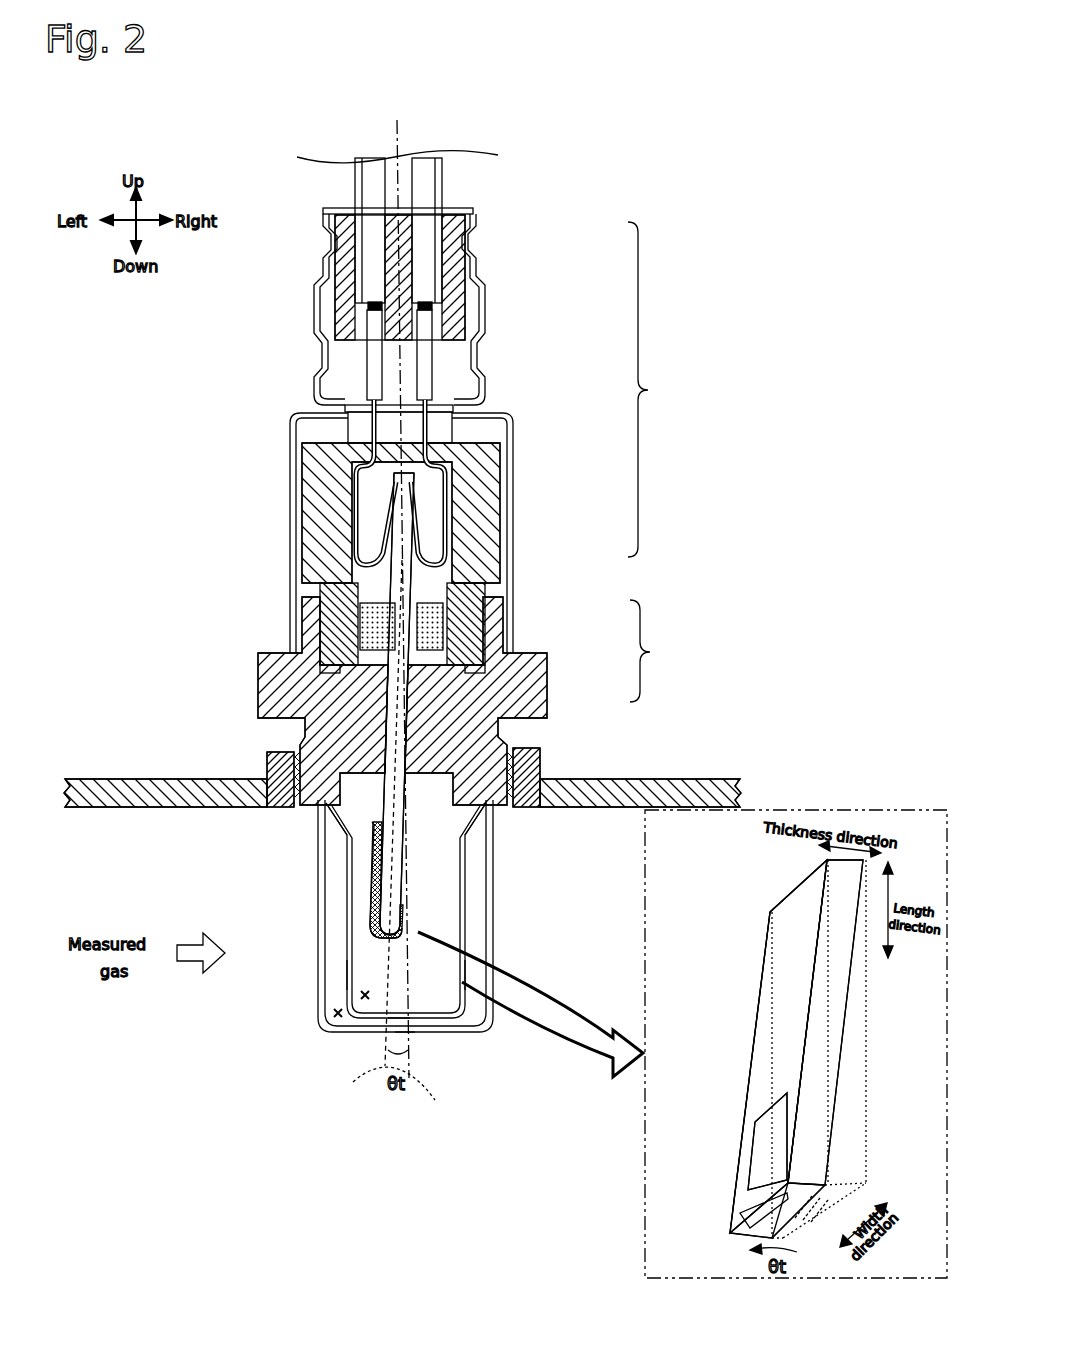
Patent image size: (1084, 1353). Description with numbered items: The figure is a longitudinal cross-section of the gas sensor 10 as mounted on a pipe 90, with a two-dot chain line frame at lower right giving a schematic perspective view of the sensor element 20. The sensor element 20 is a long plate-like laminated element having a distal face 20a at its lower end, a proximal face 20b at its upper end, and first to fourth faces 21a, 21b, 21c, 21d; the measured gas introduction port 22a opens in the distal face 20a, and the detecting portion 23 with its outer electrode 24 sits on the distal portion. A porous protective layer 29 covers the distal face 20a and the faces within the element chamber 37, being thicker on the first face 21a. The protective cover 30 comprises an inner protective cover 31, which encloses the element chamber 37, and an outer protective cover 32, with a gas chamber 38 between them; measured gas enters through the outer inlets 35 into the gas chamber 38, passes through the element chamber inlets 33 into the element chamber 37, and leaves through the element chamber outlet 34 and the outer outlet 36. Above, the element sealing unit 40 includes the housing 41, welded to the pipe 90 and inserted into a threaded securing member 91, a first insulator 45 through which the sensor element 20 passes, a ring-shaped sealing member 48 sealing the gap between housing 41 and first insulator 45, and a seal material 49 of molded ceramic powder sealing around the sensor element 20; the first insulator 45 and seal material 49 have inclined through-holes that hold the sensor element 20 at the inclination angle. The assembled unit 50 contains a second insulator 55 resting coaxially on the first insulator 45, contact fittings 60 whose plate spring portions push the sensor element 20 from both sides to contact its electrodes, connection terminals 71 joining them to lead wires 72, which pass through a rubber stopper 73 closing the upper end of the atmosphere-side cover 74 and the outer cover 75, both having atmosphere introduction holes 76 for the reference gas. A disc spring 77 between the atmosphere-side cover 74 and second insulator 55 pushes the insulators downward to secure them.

The gas sensor 10 is at (624, 136).
The sensor element 20 is at (382, 900).
The distal face 20a is at (388, 938).
The proximal face 20b is at (373, 450).
The first face 21a is at (372, 888).
The second face 21b is at (412, 893).
The third face 21c is at (748, 1070).
The fourth face 21d is at (813, 1118).
The measured gas introduction port 22a is at (762, 1210).
The detecting portion 23 is at (682, 1154).
The outer electrode 24 is at (752, 1152).
The protective layer 29 is at (377, 925).
The protective cover 30 is at (593, 914).
The inner protective cover 31 is at (466, 900).
The outer protective cover 32 is at (493, 930).
The element chamber inlets 33 is at (333, 845).
The element chamber outlet 34 is at (417, 1032).
The outer inlets 35 is at (332, 975).
The outer outlet 36 is at (427, 1033).
The element chamber 37 is at (362, 997).
The gas chamber 38 is at (336, 1014).
The element sealing unit 40 is at (657, 651).
The housing 41 is at (525, 690).
The first insulator 45 is at (472, 647).
The sealing member 48 is at (487, 660).
The seal material 49 is at (433, 622).
The assembled unit 50 is at (655, 389).
The second insulator 55 is at (473, 507).
The contact fittings 60 is at (440, 440).
The connection terminals 71 is at (377, 375).
The lead wires 72 is at (375, 258).
The rubber stopper 73 is at (450, 218).
The atmosphere-side cover 74 is at (515, 540).
The outer cover 75 is at (485, 330).
The atmosphere introduction holes 76 is at (490, 357).
The disc spring 77 is at (512, 418).
The pipe 90 is at (150, 790).
The securing member 91 is at (268, 753).